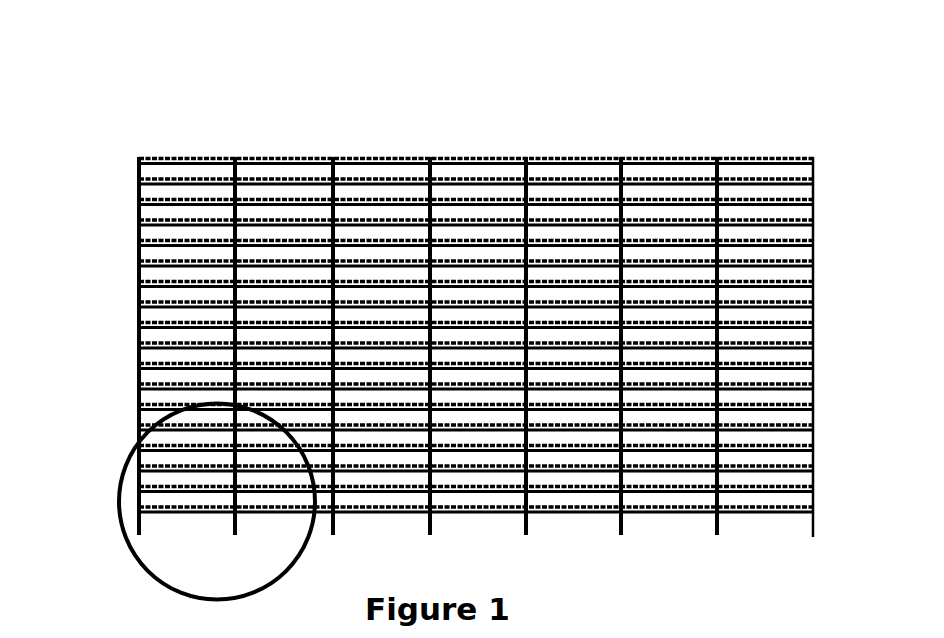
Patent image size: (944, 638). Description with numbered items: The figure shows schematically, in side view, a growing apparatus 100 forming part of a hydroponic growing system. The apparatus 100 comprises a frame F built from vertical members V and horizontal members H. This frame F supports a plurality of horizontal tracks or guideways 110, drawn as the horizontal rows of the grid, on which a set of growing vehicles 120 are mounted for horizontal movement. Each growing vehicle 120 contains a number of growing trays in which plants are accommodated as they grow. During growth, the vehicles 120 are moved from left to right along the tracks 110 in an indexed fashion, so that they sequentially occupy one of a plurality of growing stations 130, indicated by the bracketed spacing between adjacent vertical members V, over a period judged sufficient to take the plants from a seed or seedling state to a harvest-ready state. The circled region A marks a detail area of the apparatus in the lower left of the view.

The growing apparatus 100 is at (155, 126).
The horizontal tracks or guideways 110 is at (452, 165).
The growing vehicles 120 is at (163, 362).
The growing stations 130 is at (333, 152).
The vertical members V is at (139, 192).
The horizontal members H is at (139, 264).
The frame F is at (172, 157).
The detail area A is at (217, 502).